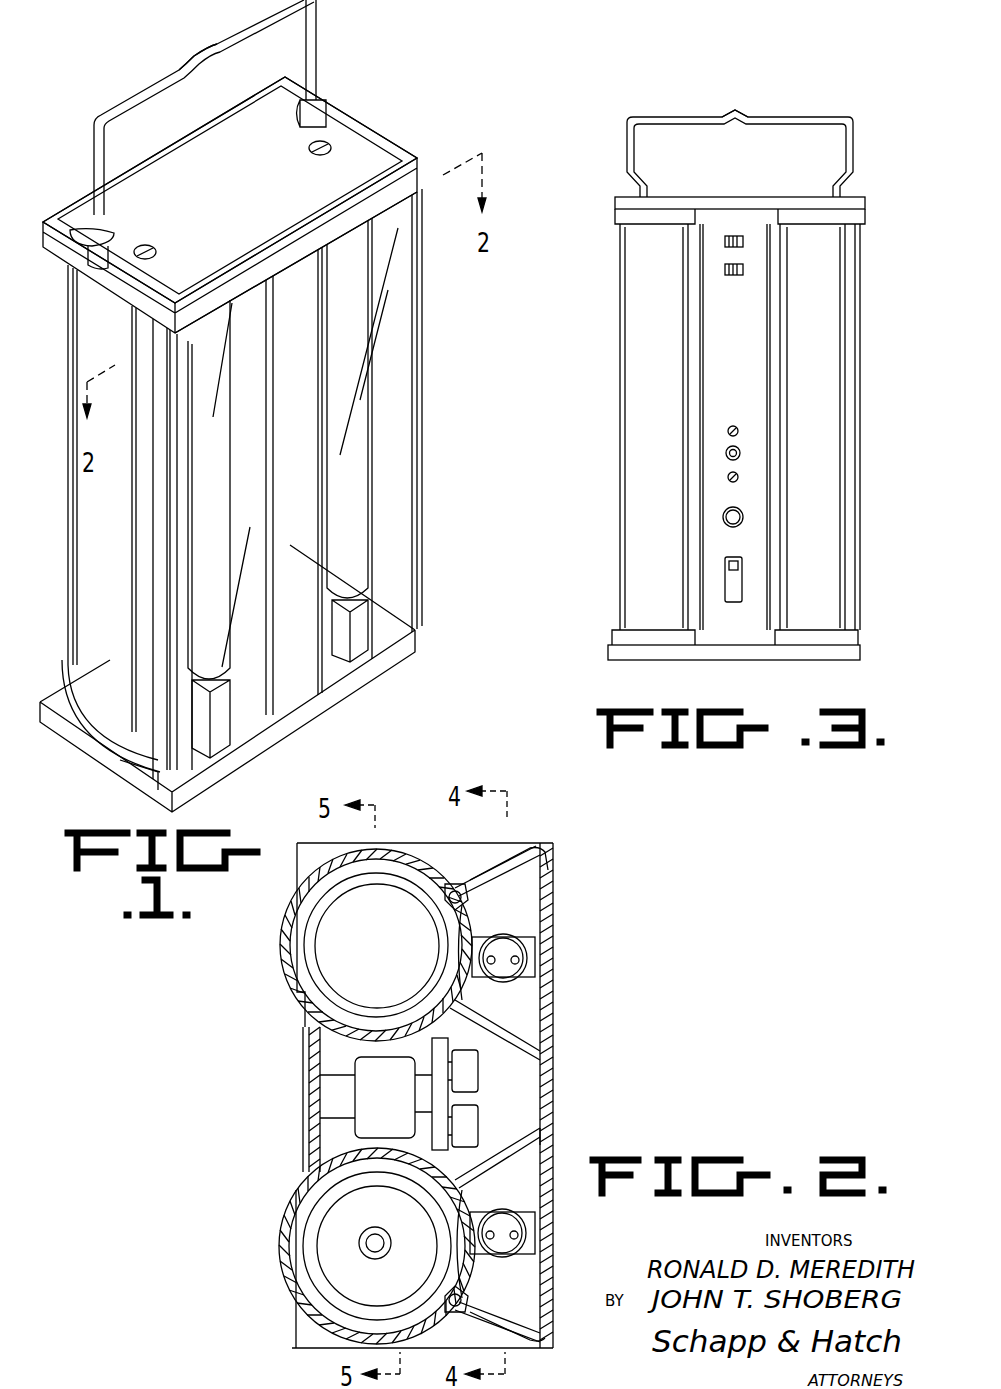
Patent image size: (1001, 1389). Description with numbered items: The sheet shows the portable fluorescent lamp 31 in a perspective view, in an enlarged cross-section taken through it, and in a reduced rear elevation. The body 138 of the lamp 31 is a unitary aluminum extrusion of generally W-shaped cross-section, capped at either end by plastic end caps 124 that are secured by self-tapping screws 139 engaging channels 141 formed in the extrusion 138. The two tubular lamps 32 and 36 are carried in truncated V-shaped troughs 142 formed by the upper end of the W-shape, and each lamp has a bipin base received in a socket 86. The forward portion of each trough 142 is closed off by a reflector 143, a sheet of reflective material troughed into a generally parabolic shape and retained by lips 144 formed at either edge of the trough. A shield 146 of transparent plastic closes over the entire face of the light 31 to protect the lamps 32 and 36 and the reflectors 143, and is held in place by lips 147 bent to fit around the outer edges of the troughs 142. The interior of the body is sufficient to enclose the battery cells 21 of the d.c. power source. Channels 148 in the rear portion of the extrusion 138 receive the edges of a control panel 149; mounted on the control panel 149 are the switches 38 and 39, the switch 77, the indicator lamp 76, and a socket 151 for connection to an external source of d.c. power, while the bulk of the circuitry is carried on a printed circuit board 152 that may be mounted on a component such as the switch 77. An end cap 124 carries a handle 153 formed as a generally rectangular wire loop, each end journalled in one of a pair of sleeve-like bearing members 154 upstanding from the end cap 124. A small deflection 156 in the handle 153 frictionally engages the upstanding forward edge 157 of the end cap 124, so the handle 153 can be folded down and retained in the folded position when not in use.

In FIG. 2, the battery cells 21 is at (380, 895).
In FIG. 1, the lamp 31 is at (437, 114).
In FIG. 1, the tubular lamp 32 is at (360, 445).
In FIG. 2, the tubular lamp 32 is at (520, 977).
In FIG. 1, the tubular lamp 36 is at (205, 510).
In FIG. 2, the tubular lamp 36 is at (525, 1241).
In FIG. 3, the switch 38 is at (736, 240).
In FIG. 3, the switch 39 is at (735, 278).
In FIG. 3, the indicator lamp 76 is at (745, 518).
In FIG. 3, the switch 77 is at (745, 576).
In FIG. 2, the switch 77 is at (355, 1120).
In FIG. 1, the socket 86 is at (358, 625).
In FIG. 2, the socket 86 is at (535, 957).
In FIG. 1, the end cap 124 is at (418, 160).
In FIG. 3, the end cap 124 is at (618, 198).
In FIG. 2, the end cap 124 is at (447, 856).
In FIG. 1, the body 138 is at (78, 620).
In FIG. 3, the body 138 is at (848, 435).
In FIG. 2, the body 138 is at (290, 965).
In FIG. 1, the self-tapping screw 139 is at (330, 148).
In FIG. 2, the self-tapping screw 139 is at (452, 906).
In FIG. 2, the channel 141 is at (450, 898).
In FIG. 2, the trough 142 is at (520, 905).
In FIG. 2, the reflector 143 is at (545, 892).
In FIG. 2, the lip 144 is at (545, 860).
In FIG. 1, the shield 146 is at (390, 480).
In FIG. 2, the shield 146 is at (548, 1147).
In FIG. 2, the lip 147 is at (530, 850).
In FIG. 2, the channel 148 is at (312, 1036).
In FIG. 3, the control panel 149 is at (760, 385).
In FIG. 2, the control panel 149 is at (312, 1077).
In FIG. 3, the socket 151 is at (742, 453).
In FIG. 2, the printed circuit board 152 is at (480, 1092).
In FIG. 1, the handle 153 is at (316, 48).
In FIG. 3, the handle 153 is at (835, 118).
In FIG. 1, the bearing member 154 is at (320, 110).
In FIG. 1, the deflection 156 is at (195, 60).
In FIG. 3, the deflection 156 is at (745, 112).
In FIG. 1, the forward edge 157 is at (290, 236).